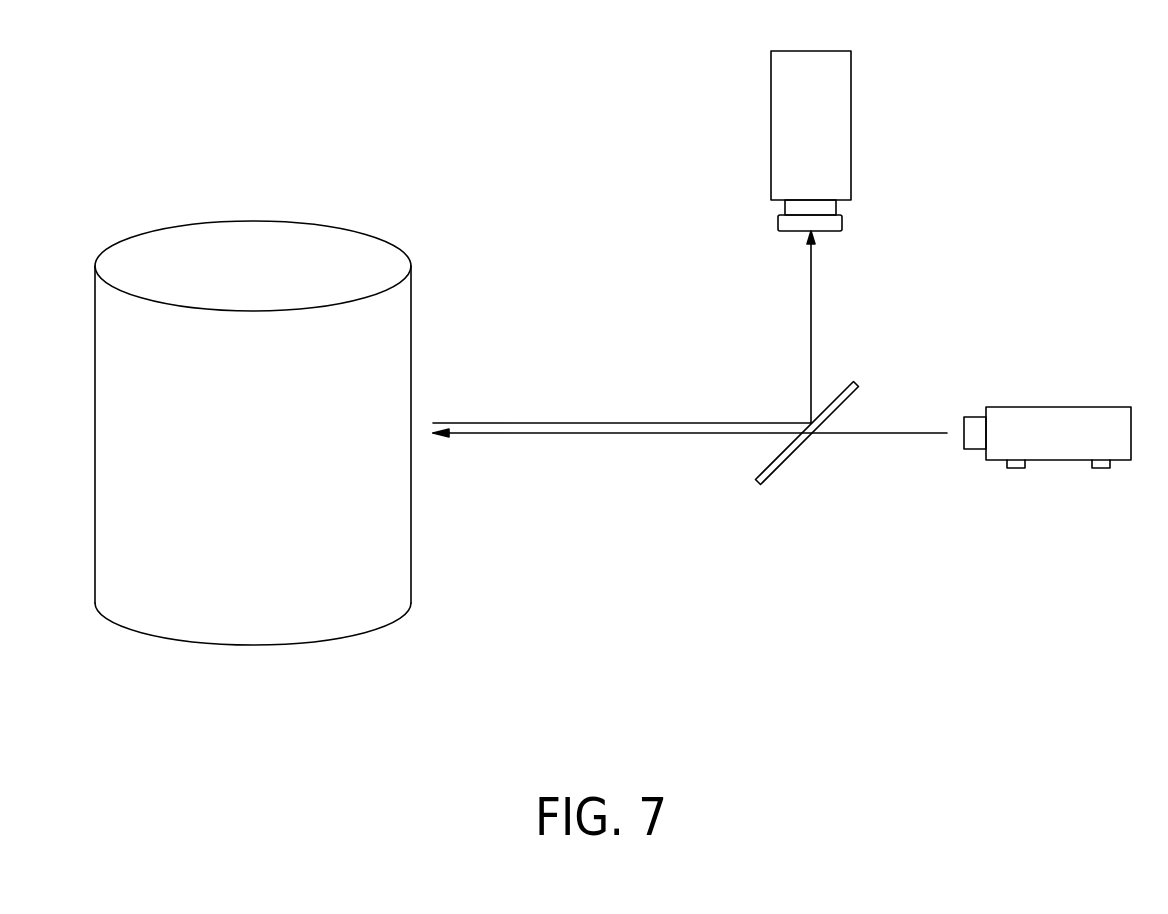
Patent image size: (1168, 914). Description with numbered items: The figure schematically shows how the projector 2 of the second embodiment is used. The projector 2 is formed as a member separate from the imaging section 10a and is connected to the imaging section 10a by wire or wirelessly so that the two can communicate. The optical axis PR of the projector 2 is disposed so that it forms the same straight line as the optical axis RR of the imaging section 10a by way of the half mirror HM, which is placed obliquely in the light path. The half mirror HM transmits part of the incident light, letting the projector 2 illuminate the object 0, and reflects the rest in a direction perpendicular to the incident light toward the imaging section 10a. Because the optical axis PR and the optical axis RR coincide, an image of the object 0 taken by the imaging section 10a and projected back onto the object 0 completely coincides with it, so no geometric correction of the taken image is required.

The object 0 is at (251, 220).
The imaging section 10a is at (851, 120).
The projector 2 is at (1055, 407).
The optical axis of the imaging section RR is at (548, 422).
The optical axis of the projector PR is at (625, 435).
The half mirror HM is at (780, 470).